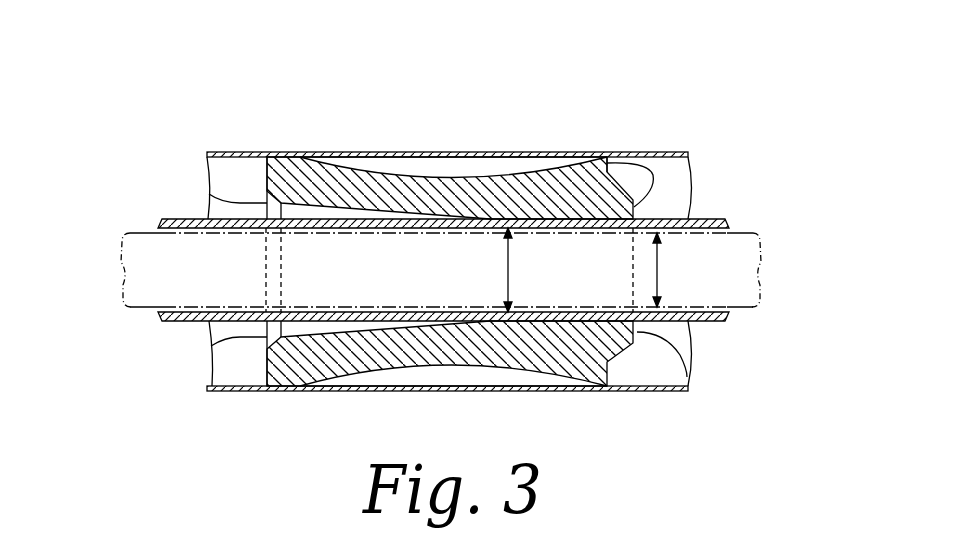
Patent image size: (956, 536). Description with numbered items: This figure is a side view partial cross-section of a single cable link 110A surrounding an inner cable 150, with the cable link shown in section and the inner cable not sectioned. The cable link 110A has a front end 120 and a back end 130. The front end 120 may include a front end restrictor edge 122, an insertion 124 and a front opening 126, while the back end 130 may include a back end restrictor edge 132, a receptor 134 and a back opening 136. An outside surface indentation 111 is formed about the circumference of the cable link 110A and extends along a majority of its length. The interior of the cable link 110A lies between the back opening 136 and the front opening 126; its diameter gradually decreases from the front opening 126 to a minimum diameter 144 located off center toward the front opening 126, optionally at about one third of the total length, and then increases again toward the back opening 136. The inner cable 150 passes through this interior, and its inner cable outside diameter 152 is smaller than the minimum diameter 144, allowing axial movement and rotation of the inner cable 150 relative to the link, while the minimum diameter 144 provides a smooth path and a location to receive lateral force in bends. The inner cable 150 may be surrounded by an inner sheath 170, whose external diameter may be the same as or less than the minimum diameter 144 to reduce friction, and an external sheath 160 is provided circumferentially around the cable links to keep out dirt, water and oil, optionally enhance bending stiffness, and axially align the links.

The cable link 110A is at (395, 194).
The outside surface indentation 111 is at (467, 175).
The front end 120 is at (685, 151).
The front end restrictor edge 122 is at (608, 156).
The insertion 124 is at (653, 152).
The front opening 126 is at (688, 357).
The back end 130 is at (213, 343).
The back end restrictor edge 132 is at (190, 151).
The receptor 134 is at (209, 193).
The back opening 136 is at (273, 212).
The minimum diameter 144 is at (507, 258).
The inner cable 150 is at (746, 226).
The inner cable outside diameter 152 is at (658, 280).
The external sheath 160 is at (627, 392).
The inner sheath 170 is at (728, 322).